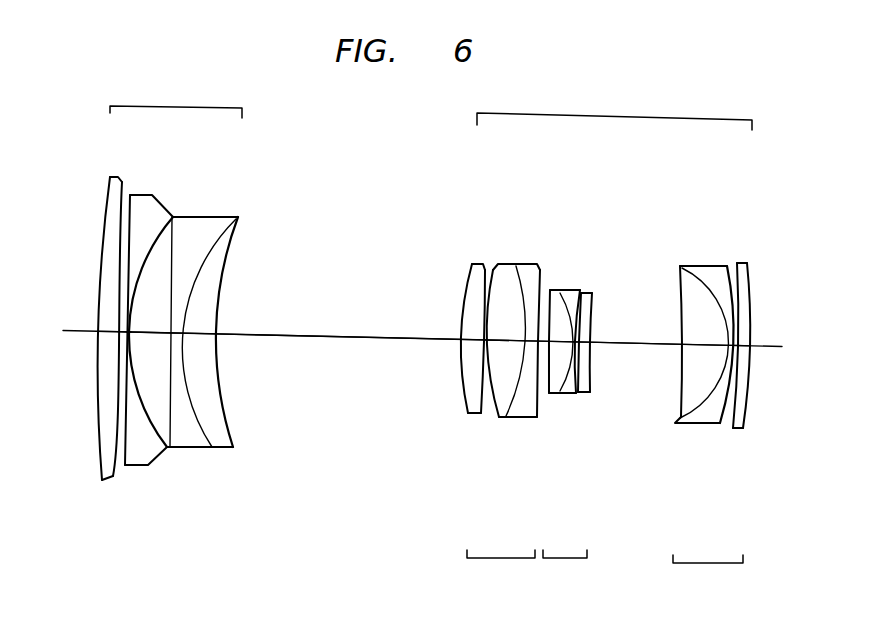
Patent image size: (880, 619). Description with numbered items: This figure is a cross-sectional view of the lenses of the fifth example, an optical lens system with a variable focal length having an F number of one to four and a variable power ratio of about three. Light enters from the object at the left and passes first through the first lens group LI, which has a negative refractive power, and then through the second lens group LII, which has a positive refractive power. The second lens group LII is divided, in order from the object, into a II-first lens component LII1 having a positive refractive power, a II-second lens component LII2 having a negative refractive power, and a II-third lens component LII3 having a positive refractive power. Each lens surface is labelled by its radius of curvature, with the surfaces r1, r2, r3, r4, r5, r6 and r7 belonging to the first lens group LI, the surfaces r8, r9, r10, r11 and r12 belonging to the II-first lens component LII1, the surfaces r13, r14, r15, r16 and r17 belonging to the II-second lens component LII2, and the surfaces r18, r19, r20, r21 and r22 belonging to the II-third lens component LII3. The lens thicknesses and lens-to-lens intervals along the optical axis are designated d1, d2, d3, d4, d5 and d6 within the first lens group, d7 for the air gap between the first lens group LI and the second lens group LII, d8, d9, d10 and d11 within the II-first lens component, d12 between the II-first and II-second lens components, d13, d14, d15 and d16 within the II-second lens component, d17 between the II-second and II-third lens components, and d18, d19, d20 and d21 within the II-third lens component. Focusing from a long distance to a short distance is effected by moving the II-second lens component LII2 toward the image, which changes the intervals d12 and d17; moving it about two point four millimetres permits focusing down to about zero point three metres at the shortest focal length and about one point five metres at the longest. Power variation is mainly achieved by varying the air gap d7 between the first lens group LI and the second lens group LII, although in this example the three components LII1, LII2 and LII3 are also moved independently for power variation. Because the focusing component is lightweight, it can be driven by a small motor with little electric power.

The first lens group LI is at (176, 99).
The second lens group LII is at (614, 112).
The II-first lens component LII1 is at (501, 568).
The II-second lens component LII2 is at (565, 568).
The II-third lens component LII3 is at (708, 573).
The lens surface radius of curvature r1 is at (107, 192).
The lens surface radius of curvature r2 is at (123, 186).
The lens surface radius of curvature r3 is at (131, 198).
The lens surface radius of curvature r4 is at (172, 218).
The lens surface radius of curvature r5 is at (175, 223).
The lens surface radius of curvature r6 is at (224, 221).
The lens surface radius of curvature r7 is at (240, 231).
The lens surface radius of curvature r8 is at (468, 271).
The lens surface radius of curvature r9 is at (489, 265).
The lens surface radius of curvature r10 is at (494, 280).
The lens surface radius of curvature r11 is at (518, 283).
The lens surface radius of curvature r12 is at (541, 272).
The lens surface radius of curvature r13 is at (550, 290).
The lens surface radius of curvature r14 is at (567, 290).
The lens surface radius of curvature r15 is at (578, 292).
The lens surface radius of curvature r16 is at (587, 294).
The lens surface radius of curvature r17 is at (595, 300).
The lens surface radius of curvature r18 is at (680, 272).
The lens surface radius of curvature r19 is at (697, 276).
The lens surface radius of curvature r20 is at (728, 271).
The lens surface radius of curvature r21 is at (737, 271).
The lens surface radius of curvature r22 is at (750, 271).
The lens thickness d1 is at (106, 333).
The lens-to-lens interval d2 is at (122, 335).
The lens thickness d3 is at (130, 370).
The lens-to-lens interval d4 is at (160, 345).
The lens thickness d5 is at (190, 345).
The lens thickness d6 is at (208, 345).
The lens-to-lens interval d7 is at (352, 341).
The lens thickness d8 is at (464, 362).
The lens-to-lens interval d9 is at (485, 365).
The lens thickness d10 is at (503, 370).
The lens thickness d11 is at (529, 415).
The lens-to-lens interval d12 is at (544, 370).
The lens thickness d13 is at (551, 398).
The lens thickness d14 is at (562, 396).
The lens-to-lens interval d15 is at (576, 396).
The lens thickness d16 is at (583, 393).
The lens-to-lens interval d17 is at (643, 346).
The lens thickness d18 is at (702, 350).
The lens thickness d19 is at (710, 352).
The lens-to-lens interval d20 is at (733, 352).
The lens thickness d21 is at (745, 350).